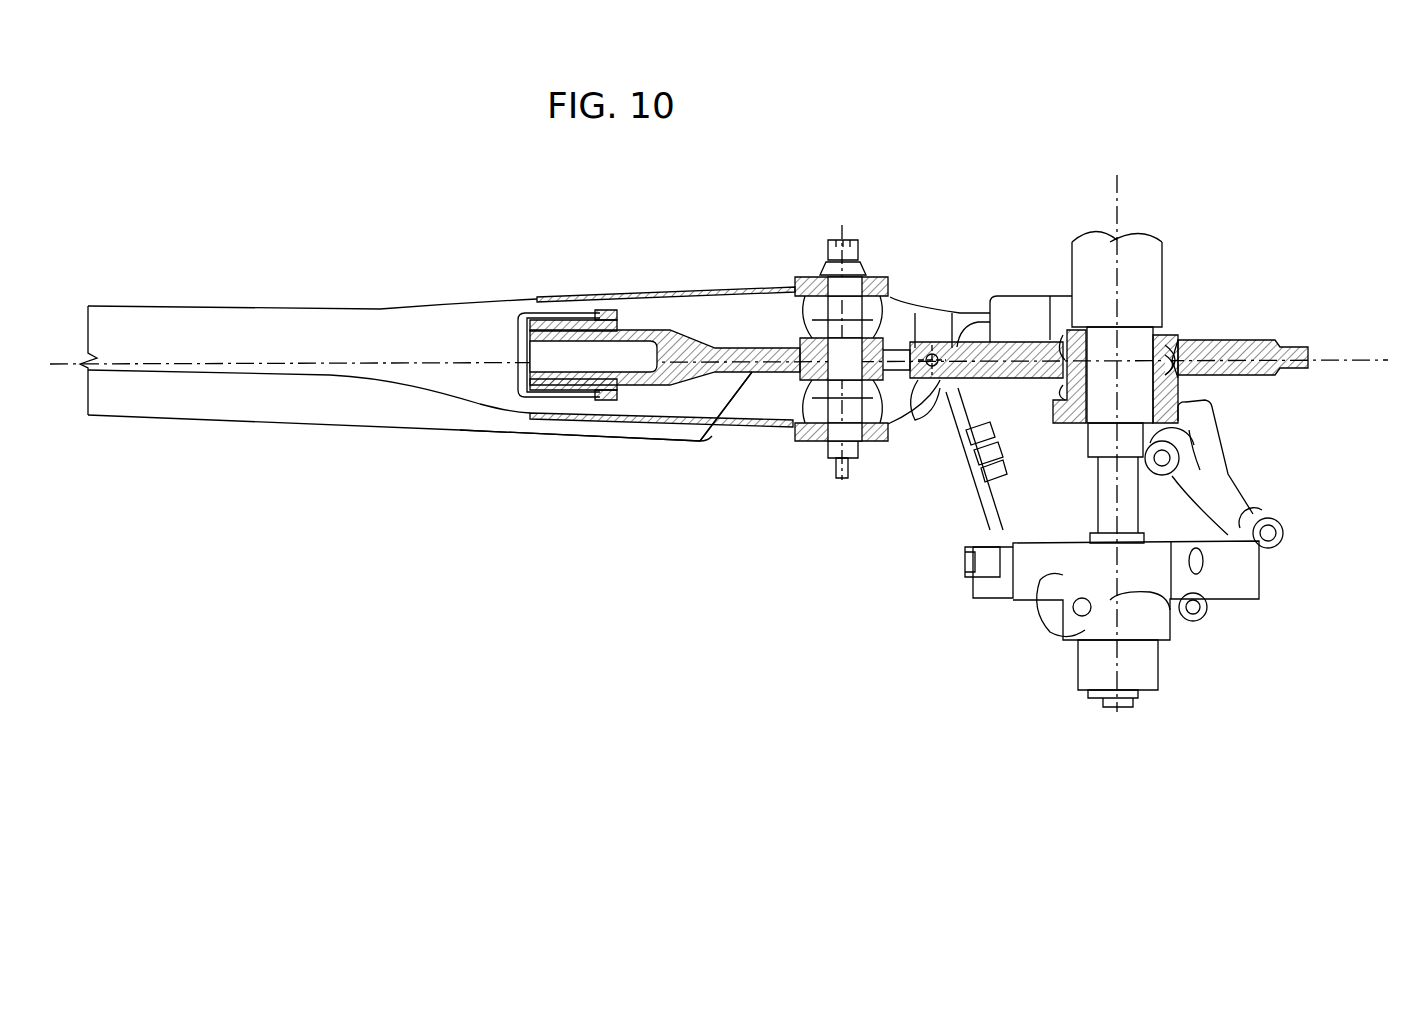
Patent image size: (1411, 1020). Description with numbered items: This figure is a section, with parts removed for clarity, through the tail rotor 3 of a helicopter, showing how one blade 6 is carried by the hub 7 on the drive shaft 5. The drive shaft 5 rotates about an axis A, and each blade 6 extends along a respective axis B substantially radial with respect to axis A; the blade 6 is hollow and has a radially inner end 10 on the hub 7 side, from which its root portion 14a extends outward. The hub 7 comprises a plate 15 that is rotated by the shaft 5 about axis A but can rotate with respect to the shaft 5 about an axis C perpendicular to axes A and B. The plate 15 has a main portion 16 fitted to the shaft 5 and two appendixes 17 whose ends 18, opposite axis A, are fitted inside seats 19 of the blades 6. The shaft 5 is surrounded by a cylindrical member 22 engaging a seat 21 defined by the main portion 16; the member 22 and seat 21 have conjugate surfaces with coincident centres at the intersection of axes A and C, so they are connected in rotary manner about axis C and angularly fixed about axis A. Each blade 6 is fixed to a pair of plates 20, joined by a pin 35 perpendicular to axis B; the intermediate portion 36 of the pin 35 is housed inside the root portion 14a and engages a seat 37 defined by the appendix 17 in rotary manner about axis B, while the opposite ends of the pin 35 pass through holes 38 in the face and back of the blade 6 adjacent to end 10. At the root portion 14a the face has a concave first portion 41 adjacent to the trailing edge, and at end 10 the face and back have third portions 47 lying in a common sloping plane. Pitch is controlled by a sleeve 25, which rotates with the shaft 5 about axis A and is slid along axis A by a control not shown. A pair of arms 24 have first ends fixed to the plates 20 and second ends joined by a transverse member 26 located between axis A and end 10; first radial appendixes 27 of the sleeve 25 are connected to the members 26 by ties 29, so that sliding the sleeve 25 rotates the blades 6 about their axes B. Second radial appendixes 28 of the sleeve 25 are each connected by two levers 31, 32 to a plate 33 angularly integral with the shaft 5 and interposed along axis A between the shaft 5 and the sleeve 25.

The tail rotor 3 is at (1218, 190).
The drive shaft 5 is at (1155, 255).
The blade 6 is at (421, 342).
The hub 7 is at (1210, 264).
The radially inner end 10 is at (732, 442).
The root portion 14a is at (638, 291).
The plate 15 is at (1240, 348).
The main portion 16 is at (1025, 350).
The appendix 17 is at (678, 340).
The end 18 is at (592, 330).
The seat 19 is at (553, 328).
The plate 20 is at (743, 290).
The seat 21 is at (1069, 343).
The cylindrical member 22 is at (1178, 372).
The arm 24 is at (903, 303).
The sleeve 25 is at (1137, 683).
The transverse member 26 is at (940, 385).
The first radial appendix 27 is at (1251, 568).
The second radial appendix 28 is at (1053, 617).
The tie 29 is at (1003, 525).
The lever 31 is at (1213, 613).
The lever 32 is at (1233, 488).
The plate 33 is at (1063, 417).
The pin 35 is at (828, 425).
The intermediate portion 36 is at (858, 290).
The seat 37 is at (822, 336).
The hole 38 is at (841, 285).
The concave first portion 41 is at (700, 443).
The third portion 47 is at (740, 385).
The axis A is at (1117, 183).
The axis B is at (238, 357).
The axis C is at (1120, 358).